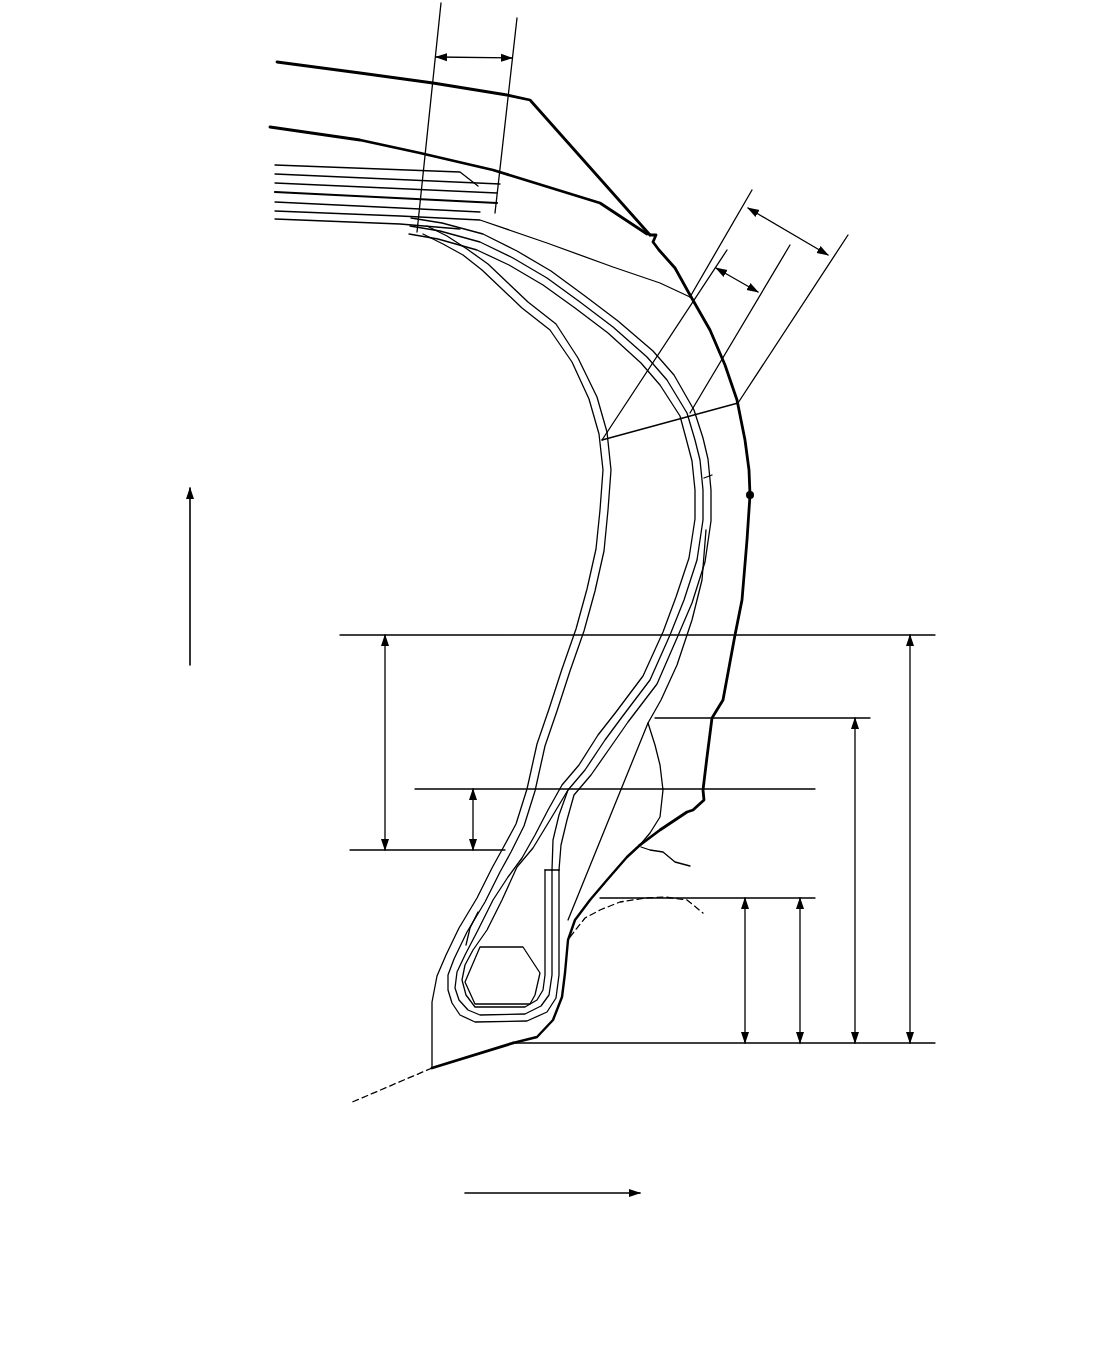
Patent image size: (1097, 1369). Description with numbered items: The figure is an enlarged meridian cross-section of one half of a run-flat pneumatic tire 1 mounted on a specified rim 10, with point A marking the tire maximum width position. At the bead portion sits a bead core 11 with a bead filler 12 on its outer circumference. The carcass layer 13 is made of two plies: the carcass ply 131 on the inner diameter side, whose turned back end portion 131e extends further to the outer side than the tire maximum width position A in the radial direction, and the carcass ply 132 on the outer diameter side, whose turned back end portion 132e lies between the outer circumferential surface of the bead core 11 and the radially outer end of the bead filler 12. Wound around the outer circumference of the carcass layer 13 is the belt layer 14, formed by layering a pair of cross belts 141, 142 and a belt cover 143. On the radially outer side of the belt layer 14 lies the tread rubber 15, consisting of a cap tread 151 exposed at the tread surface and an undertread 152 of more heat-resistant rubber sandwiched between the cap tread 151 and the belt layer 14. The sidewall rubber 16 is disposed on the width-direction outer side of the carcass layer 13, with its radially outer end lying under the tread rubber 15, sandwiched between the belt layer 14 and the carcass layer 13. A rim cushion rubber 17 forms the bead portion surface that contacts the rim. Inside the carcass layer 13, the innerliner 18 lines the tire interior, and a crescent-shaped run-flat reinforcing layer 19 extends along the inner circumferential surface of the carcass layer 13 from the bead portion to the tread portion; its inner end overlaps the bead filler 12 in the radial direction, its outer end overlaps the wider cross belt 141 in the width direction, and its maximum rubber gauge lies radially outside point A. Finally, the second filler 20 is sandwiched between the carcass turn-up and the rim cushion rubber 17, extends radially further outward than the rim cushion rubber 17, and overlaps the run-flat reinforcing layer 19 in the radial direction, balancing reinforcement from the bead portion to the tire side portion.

The pneumatic tire 1 is at (499, 664).
The specified rim 10 is at (642, 1000).
The bead core 11 is at (502, 1029).
The bead filler 12 is at (409, 945).
The carcass layer 13 is at (415, 408).
The carcass ply on inner diameter side 131 is at (561, 544).
The turned back end portion of carcass ply on inner diameter side 131e is at (788, 444).
The carcass ply on outer diameter side 132 is at (556, 620).
The turned back end portion of carcass ply on outer diameter side 132e is at (439, 898).
The belt layer 14 is at (203, 323).
The cross belt 141 is at (387, 247).
The cross belt 142 is at (381, 256).
The belt cover 143 is at (346, 253).
The tread rubber 15 is at (578, 60).
The cap tread 151 is at (463, 146).
The undertread 152 is at (479, 146).
The sidewall rubber 16 is at (555, 528).
The rim cushion rubber 17 is at (645, 853).
The innerliner 18 is at (519, 624).
The run-flat reinforcing layer 19 is at (520, 651).
The second filler 20 is at (637, 757).